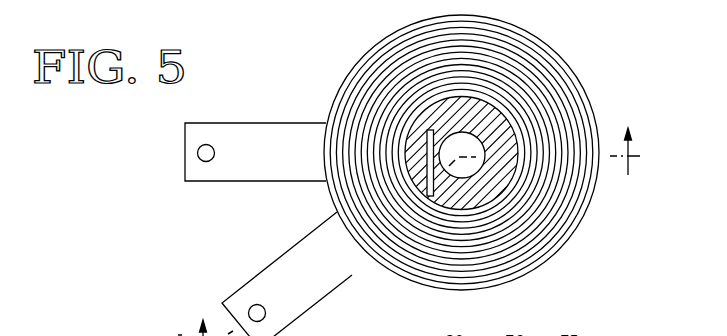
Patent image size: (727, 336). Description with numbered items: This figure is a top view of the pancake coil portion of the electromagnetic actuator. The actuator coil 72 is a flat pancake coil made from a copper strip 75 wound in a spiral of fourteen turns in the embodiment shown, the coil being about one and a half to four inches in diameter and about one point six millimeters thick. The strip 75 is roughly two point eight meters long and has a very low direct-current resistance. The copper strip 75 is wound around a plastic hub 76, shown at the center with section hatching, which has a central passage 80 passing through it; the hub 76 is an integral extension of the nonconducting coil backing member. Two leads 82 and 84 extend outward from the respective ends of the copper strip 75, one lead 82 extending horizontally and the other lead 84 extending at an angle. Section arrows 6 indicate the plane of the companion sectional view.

The actuator coil 72 is at (378, 38).
The copper strip 75 is at (548, 243).
The plastic hub 76 is at (513, 145).
The central passage 80 is at (472, 142).
The lead 82 is at (252, 170).
The lead 84 is at (281, 274).
The section line 6- 6 is at (419, 232).